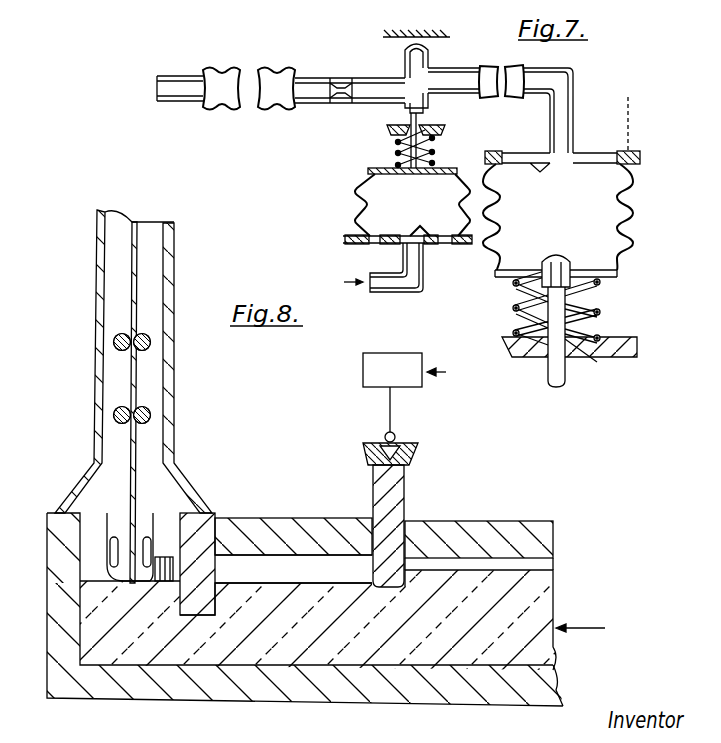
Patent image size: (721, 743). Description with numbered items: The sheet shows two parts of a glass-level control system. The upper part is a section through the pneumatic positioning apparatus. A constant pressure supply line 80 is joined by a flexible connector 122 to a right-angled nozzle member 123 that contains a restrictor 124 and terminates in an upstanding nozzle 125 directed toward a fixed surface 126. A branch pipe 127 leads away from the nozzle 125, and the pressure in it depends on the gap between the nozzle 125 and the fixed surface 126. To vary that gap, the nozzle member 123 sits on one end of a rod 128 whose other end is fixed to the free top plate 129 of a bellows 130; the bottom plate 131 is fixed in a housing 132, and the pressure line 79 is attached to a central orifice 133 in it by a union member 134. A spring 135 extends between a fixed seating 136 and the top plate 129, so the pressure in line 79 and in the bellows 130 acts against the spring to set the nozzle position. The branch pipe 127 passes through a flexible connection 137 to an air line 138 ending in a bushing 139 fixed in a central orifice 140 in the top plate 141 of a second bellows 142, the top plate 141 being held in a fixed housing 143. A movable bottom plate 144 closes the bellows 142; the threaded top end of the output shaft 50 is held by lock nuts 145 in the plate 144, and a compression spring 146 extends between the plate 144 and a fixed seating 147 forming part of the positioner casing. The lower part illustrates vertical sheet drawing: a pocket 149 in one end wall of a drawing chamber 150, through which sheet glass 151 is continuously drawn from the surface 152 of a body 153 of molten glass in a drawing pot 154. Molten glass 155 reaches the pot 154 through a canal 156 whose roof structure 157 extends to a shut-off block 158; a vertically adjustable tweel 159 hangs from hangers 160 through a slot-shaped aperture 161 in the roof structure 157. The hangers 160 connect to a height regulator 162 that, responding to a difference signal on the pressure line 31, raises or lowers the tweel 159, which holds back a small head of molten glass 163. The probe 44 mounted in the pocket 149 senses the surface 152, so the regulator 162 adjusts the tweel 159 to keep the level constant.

In FIG. 7, the constant pressure supply line 80 is at (178, 90).
In FIG. 7, the flexible connector 122 is at (274, 86).
In FIG. 7, the right-angled nozzle member 123 is at (316, 81).
In FIG. 7, the restrictor 124 is at (343, 88).
In FIG. 7, the upstanding nozzle 125 is at (437, 50).
In FIG. 7, the fixed surface 126 is at (438, 37).
In FIG. 7, the branch pipe 127 is at (464, 95).
In FIG. 7, the rod 128 is at (424, 100).
In FIG. 7, the free top plate 129 is at (396, 170).
In FIG. 7, the bellows 130 is at (375, 200).
In FIG. 7, the bottom plate 131 is at (360, 245).
In FIG. 7, the housing 132 is at (345, 238).
In FIG. 7, the central orifice 133 is at (437, 245).
In FIG. 7, the union member 134 is at (392, 246).
In FIG. 7, the spring 135 is at (434, 156).
In FIG. 7, the fixed seating 136 is at (388, 129).
In FIG. 7, the flexible connection 137 is at (488, 74).
In FIG. 7, the air line 138 is at (573, 124).
In FIG. 7, the bushing 139 is at (573, 158).
In FIG. 7, the central orifice 140 is at (536, 156).
In FIG. 7, the top plate 141 is at (558, 216).
In FIG. 7, the bellows 142 is at (520, 233).
In FIG. 7, the fixed housing 143 is at (621, 111).
In FIG. 7, the movable bottom plate 144 is at (588, 280).
In FIG. 7, the lock nuts 145 is at (545, 282).
In FIG. 7, the compression spring 146 is at (598, 316).
In FIG. 7, the fixed seating 147 is at (585, 348).
In FIG. 7, the output shaft 50 is at (548, 370).
In FIG. 7, the pressure line 79 is at (380, 292).
In FIG. 8, the pressure line 31 is at (444, 382).
In FIG. 8, the probe 44 is at (166, 560).
In FIG. 8, the pocket 149 is at (147, 545).
In FIG. 8, the drawing chamber 150 is at (108, 490).
In FIG. 8, the sheet glass 151 is at (137, 455).
In FIG. 8, the surface 152 is at (68, 514).
In FIG. 8, the body of molten glass 153 is at (215, 570).
In FIG. 8, the drawing pot 154 is at (133, 680).
In FIG. 8, the molten glass 155 is at (412, 668).
In FIG. 8, the canal 156 is at (582, 614).
In FIG. 8, the roof structure 157 is at (283, 520).
In FIG. 8, the shut-off block 158 is at (200, 514).
In FIG. 8, the tweel 159 is at (398, 486).
In FIG. 8, the hangers 160 is at (394, 416).
In FIG. 8, the slot-shaped aperture 161 is at (373, 516).
In FIG. 8, the height regulator 162 is at (363, 372).
In FIG. 8, the head of molten glass 163 is at (414, 568).